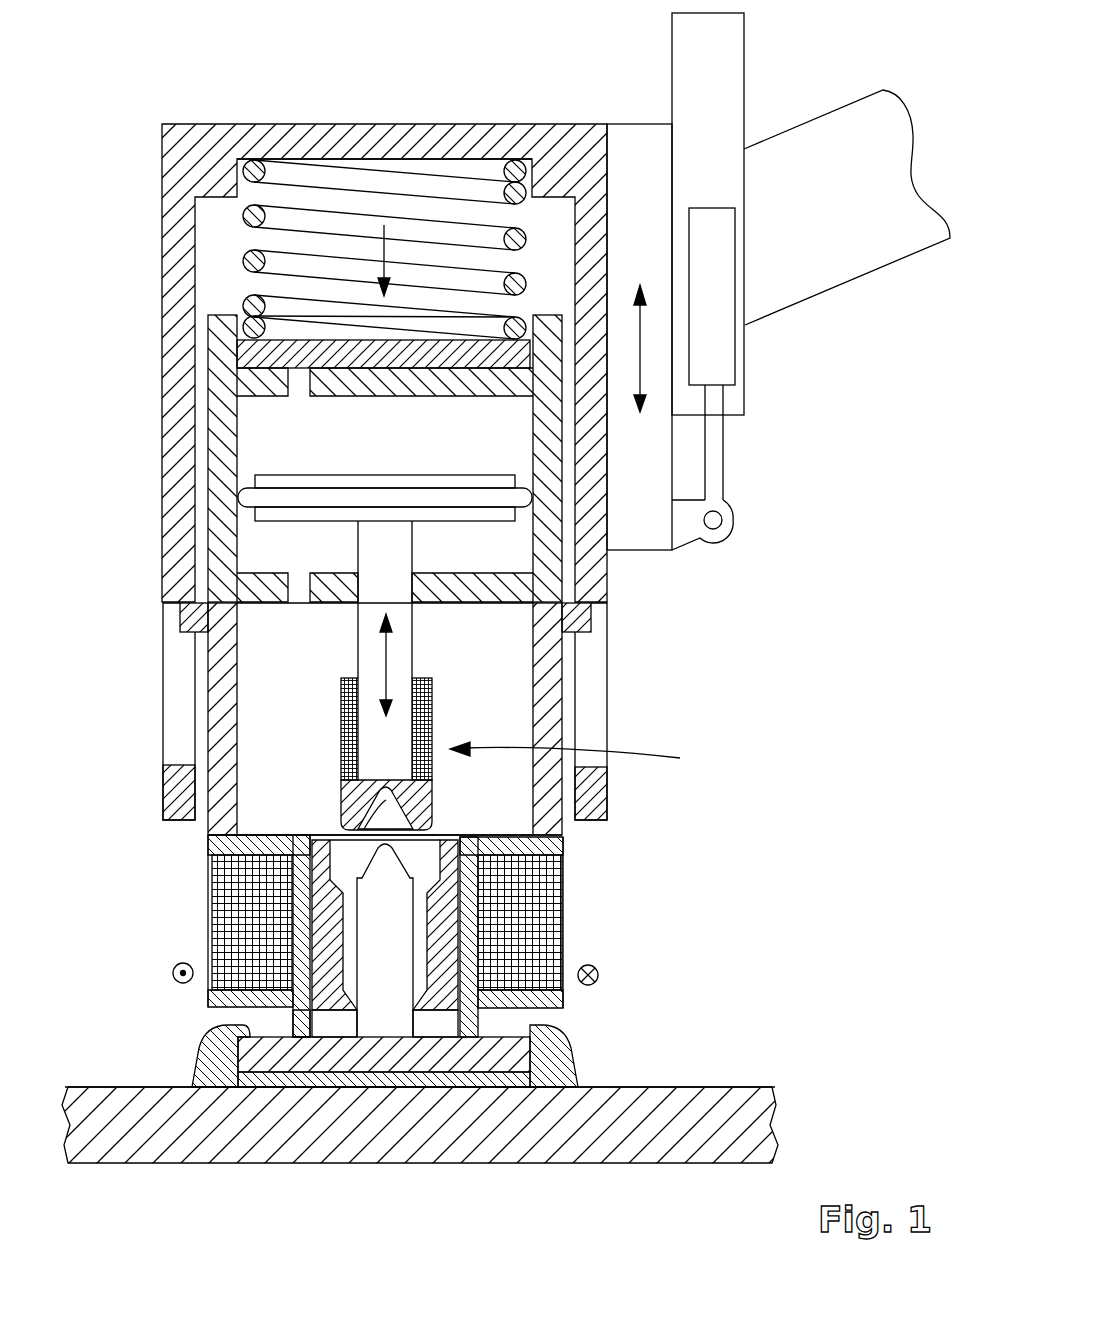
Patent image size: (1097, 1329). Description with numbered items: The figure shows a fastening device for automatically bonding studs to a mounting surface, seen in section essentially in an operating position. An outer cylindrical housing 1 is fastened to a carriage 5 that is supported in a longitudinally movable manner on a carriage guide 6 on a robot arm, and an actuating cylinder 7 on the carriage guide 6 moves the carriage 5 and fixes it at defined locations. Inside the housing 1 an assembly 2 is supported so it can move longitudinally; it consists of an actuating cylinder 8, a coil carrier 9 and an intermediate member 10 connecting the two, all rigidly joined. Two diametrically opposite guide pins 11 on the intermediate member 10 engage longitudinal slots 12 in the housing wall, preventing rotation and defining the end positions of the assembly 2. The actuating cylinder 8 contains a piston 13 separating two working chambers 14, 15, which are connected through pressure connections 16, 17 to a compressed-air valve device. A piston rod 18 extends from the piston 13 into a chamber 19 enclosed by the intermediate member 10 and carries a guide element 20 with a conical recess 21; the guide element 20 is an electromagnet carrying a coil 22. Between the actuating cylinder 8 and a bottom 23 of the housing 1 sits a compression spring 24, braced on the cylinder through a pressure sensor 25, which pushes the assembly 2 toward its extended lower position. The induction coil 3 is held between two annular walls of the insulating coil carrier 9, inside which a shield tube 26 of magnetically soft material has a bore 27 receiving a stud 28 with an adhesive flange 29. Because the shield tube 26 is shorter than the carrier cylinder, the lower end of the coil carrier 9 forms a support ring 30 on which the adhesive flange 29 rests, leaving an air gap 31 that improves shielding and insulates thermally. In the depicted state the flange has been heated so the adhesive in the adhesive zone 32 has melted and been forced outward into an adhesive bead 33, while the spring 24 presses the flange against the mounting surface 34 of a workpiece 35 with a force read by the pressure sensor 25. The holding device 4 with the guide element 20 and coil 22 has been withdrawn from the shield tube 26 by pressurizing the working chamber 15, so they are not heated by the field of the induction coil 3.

The housing 1 is at (180, 228).
The assembly 2 is at (182, 860).
The induction coil 3 is at (220, 942).
The holding device 4 is at (579, 759).
The carriage 5 is at (640, 137).
The carriage guide 6 is at (722, 112).
The actuating cylinder 7 is at (725, 368).
The actuating cylinder 8 is at (218, 450).
The coil carrier 9 is at (230, 1002).
The intermediate member 10 is at (555, 658).
The guide pins 11 is at (178, 616).
The longitudinal slot 12 is at (178, 660).
The piston 13 is at (262, 510).
The working chamber 14 is at (517, 440).
The working chamber 15 is at (516, 552).
The pressure connection 16 is at (300, 385).
The pressure connection 17 is at (300, 590).
The piston rod 18 is at (398, 572).
The chamber 19 is at (257, 697).
The guide element 20 is at (352, 800).
The conical recess 21 is at (395, 820).
The coil 22 is at (341, 745).
The bottom 23 is at (388, 148).
The compression spring 24 is at (253, 258).
The pressure sensor 25 is at (240, 352).
The shield tube 26 is at (318, 1040).
The bore 27 is at (442, 905).
The stud 28 is at (400, 940).
The adhesive flange 29 is at (397, 1060).
The support ring 30 is at (298, 1017).
The air gap 31 is at (343, 1040).
The adhesive zone 32 is at (472, 1084).
The adhesive bead 33 is at (570, 1058).
The mounting surface 34 is at (720, 1087).
The workpiece 35 is at (600, 1135).